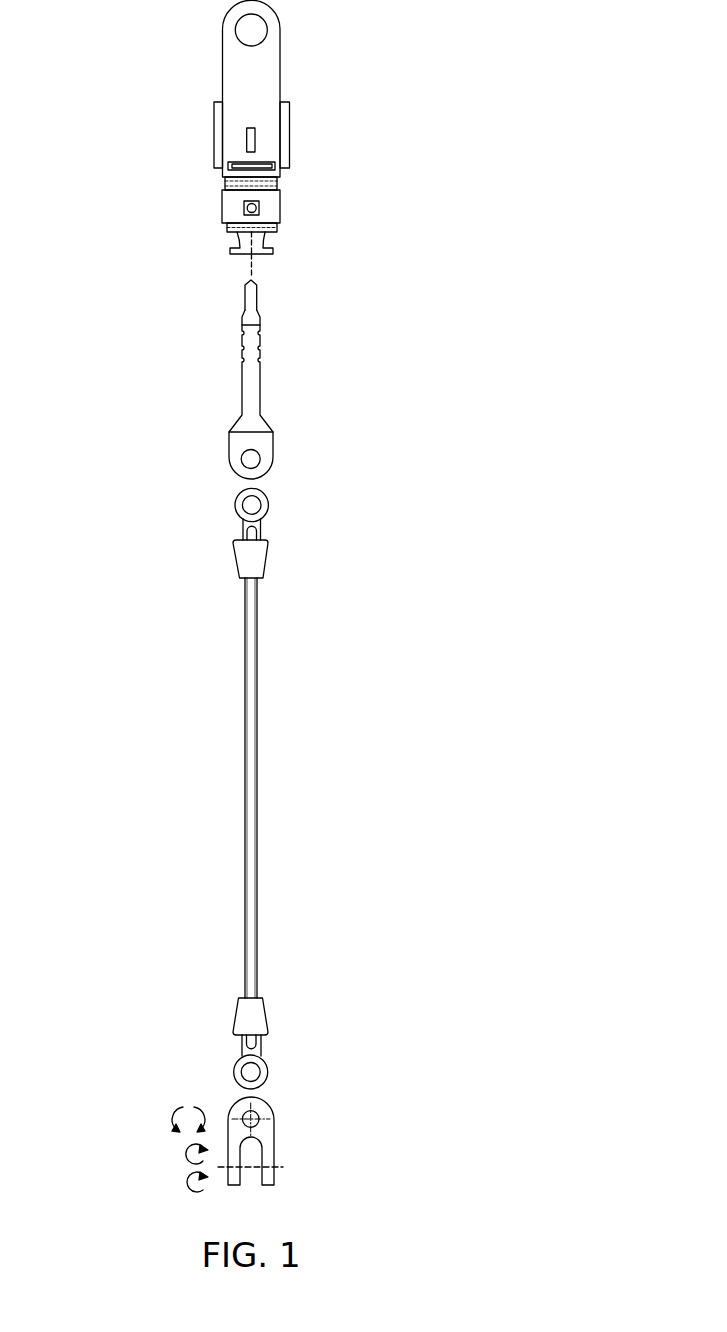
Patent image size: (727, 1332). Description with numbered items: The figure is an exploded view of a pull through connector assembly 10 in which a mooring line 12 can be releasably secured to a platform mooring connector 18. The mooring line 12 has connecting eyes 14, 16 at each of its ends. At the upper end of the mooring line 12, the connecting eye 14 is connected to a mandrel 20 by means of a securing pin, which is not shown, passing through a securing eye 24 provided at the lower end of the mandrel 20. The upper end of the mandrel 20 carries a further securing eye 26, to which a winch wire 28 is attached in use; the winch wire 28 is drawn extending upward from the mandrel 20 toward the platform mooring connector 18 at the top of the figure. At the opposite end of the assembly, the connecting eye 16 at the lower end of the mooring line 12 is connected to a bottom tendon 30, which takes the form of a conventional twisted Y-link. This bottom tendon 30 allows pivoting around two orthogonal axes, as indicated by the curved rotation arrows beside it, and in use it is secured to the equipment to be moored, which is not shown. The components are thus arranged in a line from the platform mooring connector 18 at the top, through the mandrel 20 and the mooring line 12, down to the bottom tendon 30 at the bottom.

The pull through connector assembly 10 is at (512, 241).
The mooring line 12 is at (258, 650).
The connecting eye 14 is at (268, 507).
The connecting eye 16 is at (262, 1070).
The platform mooring connector 18 is at (162, 148).
The mandrel 20 is at (342, 371).
The securing eye 24 is at (262, 458).
The securing eye 26 is at (248, 286).
The winch wire 28 is at (252, 263).
The bottom tendon 30 is at (300, 1168).